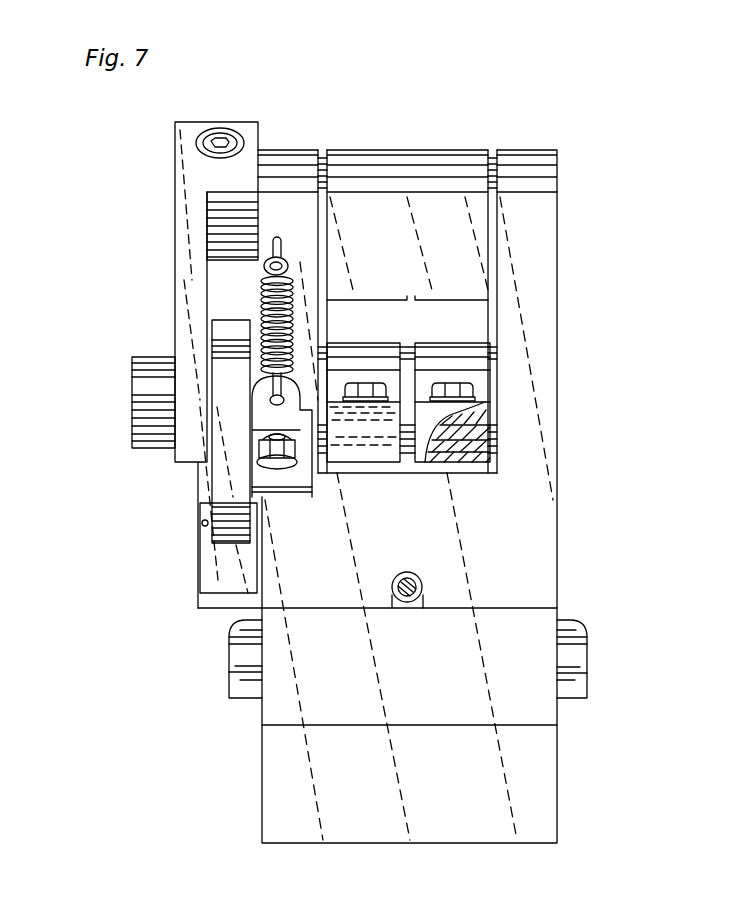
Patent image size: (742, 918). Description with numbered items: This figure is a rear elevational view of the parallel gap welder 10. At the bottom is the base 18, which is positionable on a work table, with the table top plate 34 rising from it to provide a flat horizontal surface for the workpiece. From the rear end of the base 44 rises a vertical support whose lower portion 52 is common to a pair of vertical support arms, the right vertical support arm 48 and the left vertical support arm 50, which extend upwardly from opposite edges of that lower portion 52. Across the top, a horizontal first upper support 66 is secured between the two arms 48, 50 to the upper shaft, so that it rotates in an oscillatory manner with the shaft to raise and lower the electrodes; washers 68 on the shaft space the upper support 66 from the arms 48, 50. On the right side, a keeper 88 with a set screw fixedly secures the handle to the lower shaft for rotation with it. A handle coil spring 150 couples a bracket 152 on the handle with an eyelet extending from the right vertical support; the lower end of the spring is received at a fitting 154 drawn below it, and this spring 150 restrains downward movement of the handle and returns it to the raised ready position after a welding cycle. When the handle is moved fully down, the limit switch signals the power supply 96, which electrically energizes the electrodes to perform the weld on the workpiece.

The parallel gap welder 10 is at (285, 69).
The right vertical support arm 48 is at (282, 150).
The washers 68 is at (322, 152).
The first upper support 66 is at (400, 150).
The left vertical support arm 50 is at (520, 150).
The lower portion of the support 52 is at (553, 557).
The keeper 88 is at (152, 363).
The bracket 152 is at (274, 243).
The handle coil spring 150 is at (262, 300).
The bracket with nut 154 is at (258, 420).
The power supply 96 is at (410, 572).
The table top plate 34 is at (590, 637).
The rear end of the base 44 is at (553, 775).
The base 18 is at (556, 838).